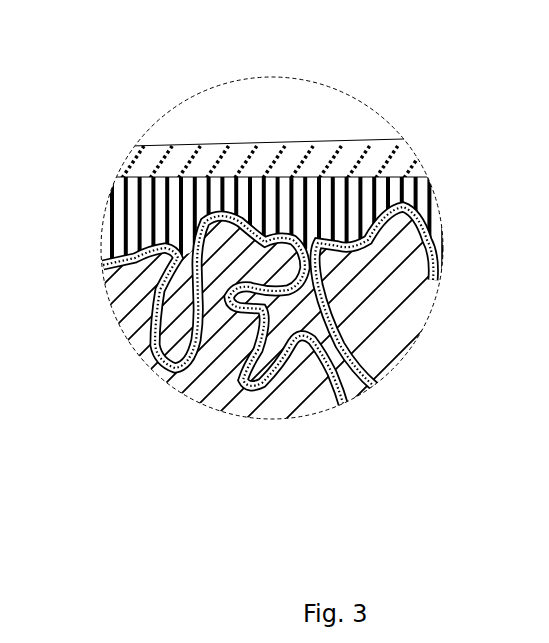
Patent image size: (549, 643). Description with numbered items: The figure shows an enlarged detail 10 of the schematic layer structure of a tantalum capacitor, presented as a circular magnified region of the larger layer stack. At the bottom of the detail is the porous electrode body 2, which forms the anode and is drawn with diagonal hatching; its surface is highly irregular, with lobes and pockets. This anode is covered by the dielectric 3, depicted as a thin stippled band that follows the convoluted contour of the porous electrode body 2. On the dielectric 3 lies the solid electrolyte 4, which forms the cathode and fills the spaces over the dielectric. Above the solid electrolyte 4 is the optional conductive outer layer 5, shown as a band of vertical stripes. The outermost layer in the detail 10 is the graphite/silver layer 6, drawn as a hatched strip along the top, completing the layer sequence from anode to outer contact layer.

The detail 10 is at (192, 92).
The graphite/silver layer 6 is at (412, 142).
The optional conductive outer layer 5 is at (125, 213).
The porous electrode body 2 is at (206, 388).
The dielectric 3 is at (323, 395).
The solid electrolyte 4 is at (365, 399).